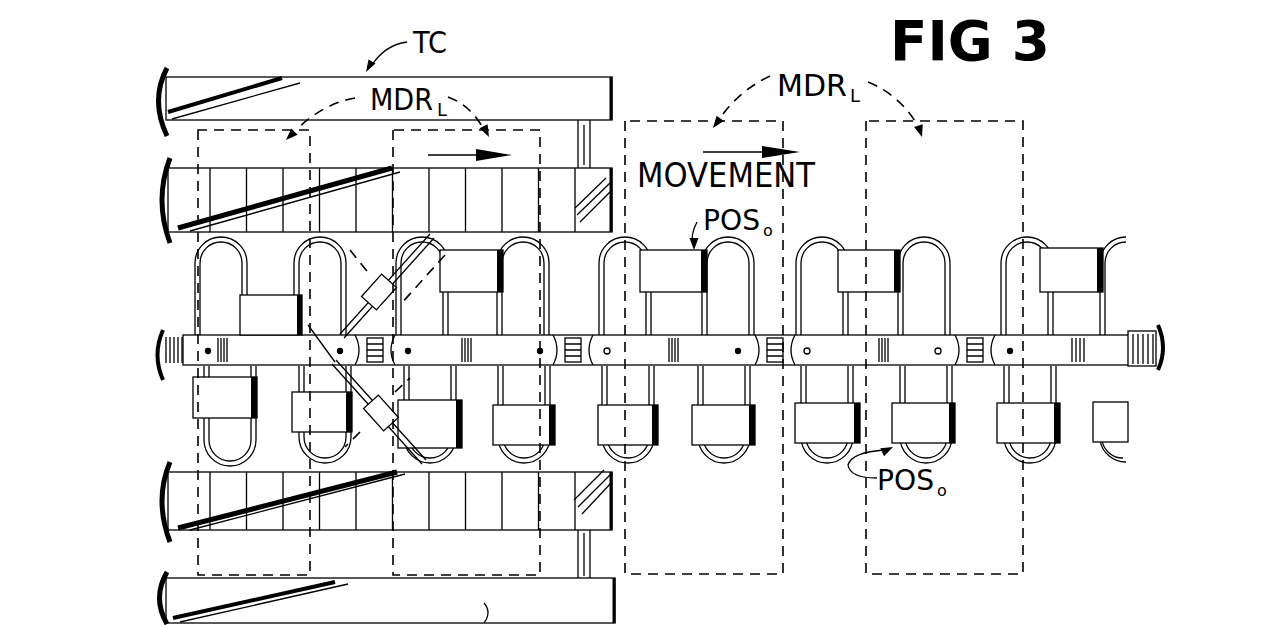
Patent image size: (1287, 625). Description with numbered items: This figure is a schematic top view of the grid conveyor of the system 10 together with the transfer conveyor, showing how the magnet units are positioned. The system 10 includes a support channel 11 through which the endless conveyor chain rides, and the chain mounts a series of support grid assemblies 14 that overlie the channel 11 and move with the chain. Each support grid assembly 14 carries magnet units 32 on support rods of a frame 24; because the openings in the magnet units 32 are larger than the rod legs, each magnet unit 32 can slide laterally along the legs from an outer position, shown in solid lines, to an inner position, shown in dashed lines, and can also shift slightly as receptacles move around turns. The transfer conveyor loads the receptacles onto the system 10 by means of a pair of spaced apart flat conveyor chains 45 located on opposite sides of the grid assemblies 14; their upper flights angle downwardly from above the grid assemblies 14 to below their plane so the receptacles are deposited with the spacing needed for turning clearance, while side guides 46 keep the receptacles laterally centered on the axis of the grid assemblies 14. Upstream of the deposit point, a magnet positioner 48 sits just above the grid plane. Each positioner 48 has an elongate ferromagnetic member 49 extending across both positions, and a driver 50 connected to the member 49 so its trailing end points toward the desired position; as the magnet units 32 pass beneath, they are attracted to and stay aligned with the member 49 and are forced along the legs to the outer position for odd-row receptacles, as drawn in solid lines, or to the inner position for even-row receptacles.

The system 10 is at (1146, 282).
The support channel 11 is at (1158, 322).
The support grid assembly 14 is at (597, 331).
The frame 24 is at (795, 326).
The magnet unit 32 is at (268, 296).
The flat conveyor chain 45 is at (180, 205).
The side guide 46 is at (255, 83).
The magnet positioner 48 is at (271, 316).
The ferromagnetic member 49 is at (402, 322).
The driver 50 is at (364, 291).